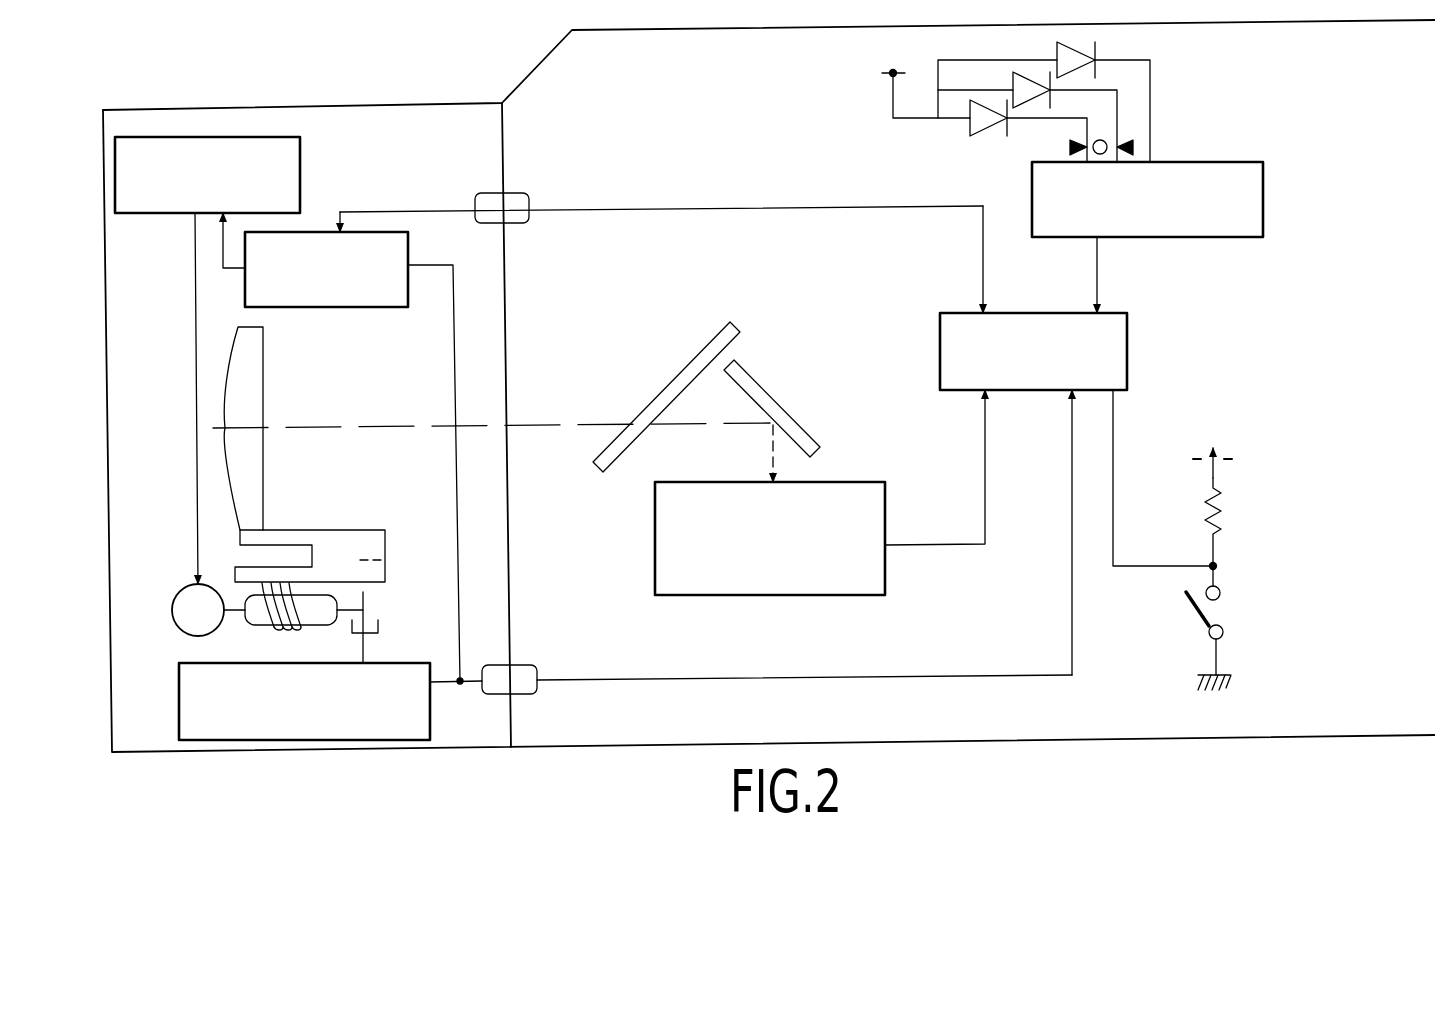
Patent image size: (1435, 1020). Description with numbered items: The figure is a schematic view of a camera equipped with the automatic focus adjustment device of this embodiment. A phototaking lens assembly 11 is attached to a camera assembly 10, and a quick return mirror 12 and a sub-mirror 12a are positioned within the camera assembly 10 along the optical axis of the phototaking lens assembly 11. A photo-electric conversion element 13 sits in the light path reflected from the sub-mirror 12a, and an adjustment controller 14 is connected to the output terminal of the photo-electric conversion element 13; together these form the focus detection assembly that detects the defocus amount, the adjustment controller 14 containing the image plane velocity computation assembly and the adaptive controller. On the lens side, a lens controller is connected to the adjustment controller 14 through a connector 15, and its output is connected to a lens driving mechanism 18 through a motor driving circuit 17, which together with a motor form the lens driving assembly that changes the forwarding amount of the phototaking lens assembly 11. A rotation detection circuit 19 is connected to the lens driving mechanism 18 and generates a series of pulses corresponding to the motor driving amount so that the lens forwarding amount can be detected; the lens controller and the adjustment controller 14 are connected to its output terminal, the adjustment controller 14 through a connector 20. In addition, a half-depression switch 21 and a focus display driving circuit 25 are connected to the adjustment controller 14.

The camera assembly 10 is at (580, 122).
The phototaking lens assembly 11 is at (263, 460).
The quick return mirror 12 is at (595, 465).
The sub-mirror 12a is at (800, 418).
The photo-electric conversion element 13 is at (822, 595).
The adjustment controller 14 is at (960, 390).
The connector 15 is at (510, 193).
The motor driving circuit 17 is at (238, 137).
The lens driving mechanism 18 is at (357, 307).
The rotation detection circuit 19 is at (307, 740).
The connector 20 is at (517, 665).
The half-depression switch 21 is at (1220, 593).
The focus display driving circuit 25 is at (1263, 190).